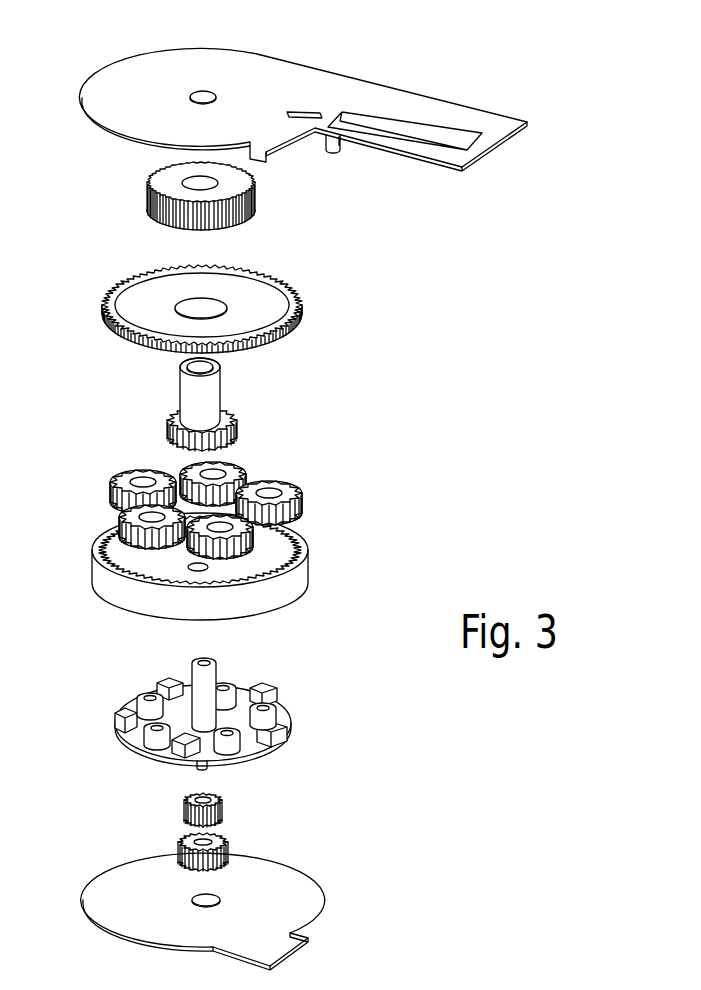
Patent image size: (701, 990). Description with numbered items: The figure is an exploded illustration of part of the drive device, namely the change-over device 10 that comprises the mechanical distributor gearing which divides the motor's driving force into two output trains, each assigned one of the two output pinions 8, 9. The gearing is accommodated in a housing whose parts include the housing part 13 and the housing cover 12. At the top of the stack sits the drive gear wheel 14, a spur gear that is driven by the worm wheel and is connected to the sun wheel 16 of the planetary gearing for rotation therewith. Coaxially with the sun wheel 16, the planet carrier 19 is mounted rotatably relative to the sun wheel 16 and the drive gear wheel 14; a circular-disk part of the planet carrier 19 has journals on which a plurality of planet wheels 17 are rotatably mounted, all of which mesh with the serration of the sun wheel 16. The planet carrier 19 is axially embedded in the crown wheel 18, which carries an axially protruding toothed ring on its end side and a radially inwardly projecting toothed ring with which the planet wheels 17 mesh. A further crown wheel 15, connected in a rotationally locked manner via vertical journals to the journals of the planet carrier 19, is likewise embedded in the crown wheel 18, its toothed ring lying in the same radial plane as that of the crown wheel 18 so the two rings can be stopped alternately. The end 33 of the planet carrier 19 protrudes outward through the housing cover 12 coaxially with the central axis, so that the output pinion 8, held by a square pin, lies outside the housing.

The change-over device 10 is at (488, 487).
The housing part 13 is at (397, 107).
The drive gear wheel 14 is at (255, 201).
The crown wheel 15 is at (250, 300).
The sun wheel 16 is at (215, 398).
The planet wheels 17 is at (230, 523).
The crown wheel 18 is at (307, 573).
The planet carrier 19 is at (300, 710).
The end of the planet carrier 33 is at (207, 768).
The output pinion 9 is at (225, 810).
The output pinion 8 is at (232, 847).
The housing cover 12 is at (323, 908).